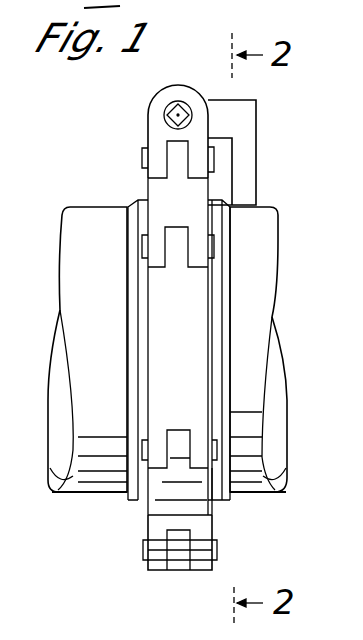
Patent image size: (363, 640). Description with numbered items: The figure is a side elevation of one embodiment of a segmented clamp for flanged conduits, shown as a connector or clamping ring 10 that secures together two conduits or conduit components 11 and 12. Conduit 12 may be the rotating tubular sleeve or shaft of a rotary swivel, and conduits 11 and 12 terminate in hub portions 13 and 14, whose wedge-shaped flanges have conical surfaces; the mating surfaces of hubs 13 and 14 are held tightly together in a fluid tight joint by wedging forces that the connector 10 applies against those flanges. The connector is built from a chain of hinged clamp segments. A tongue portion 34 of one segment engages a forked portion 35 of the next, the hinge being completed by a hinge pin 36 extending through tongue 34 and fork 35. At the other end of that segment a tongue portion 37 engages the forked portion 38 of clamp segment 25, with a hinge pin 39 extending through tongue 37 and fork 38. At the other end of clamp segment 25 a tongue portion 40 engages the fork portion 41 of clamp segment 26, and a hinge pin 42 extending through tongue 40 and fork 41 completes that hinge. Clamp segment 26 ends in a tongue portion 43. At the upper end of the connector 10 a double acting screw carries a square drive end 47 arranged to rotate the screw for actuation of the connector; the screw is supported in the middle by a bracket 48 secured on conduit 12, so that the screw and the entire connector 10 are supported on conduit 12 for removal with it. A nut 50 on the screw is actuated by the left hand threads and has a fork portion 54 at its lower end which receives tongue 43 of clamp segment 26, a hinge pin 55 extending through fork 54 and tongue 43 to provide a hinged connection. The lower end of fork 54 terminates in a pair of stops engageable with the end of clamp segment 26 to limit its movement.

The connector or clamping ring 10 is at (237, 507).
The conduit 11 is at (67, 270).
The conduit 12 is at (260, 283).
The hub portion 13 is at (130, 502).
The hub portion 14 is at (227, 502).
The clamp segment 25 is at (162, 303).
The clamp segment 26 is at (148, 187).
The tongue portion 34 is at (181, 561).
The forked portion 35 is at (155, 535).
The hinge pin 36 is at (215, 545).
The tongue portion 37 is at (180, 437).
The forked portion 38 is at (157, 440).
The hinge pin 39 is at (217, 450).
The tongue portion 40 is at (180, 237).
The fork portion 41 is at (150, 232).
The hinge pin 42 is at (142, 246).
The tongue portion 43 is at (167, 147).
The square drive end 47 is at (188, 106).
The bracket 48 is at (248, 117).
The nut 50 is at (158, 92).
The fork portion 54 is at (142, 156).
The hinge pin 55 is at (142, 150).